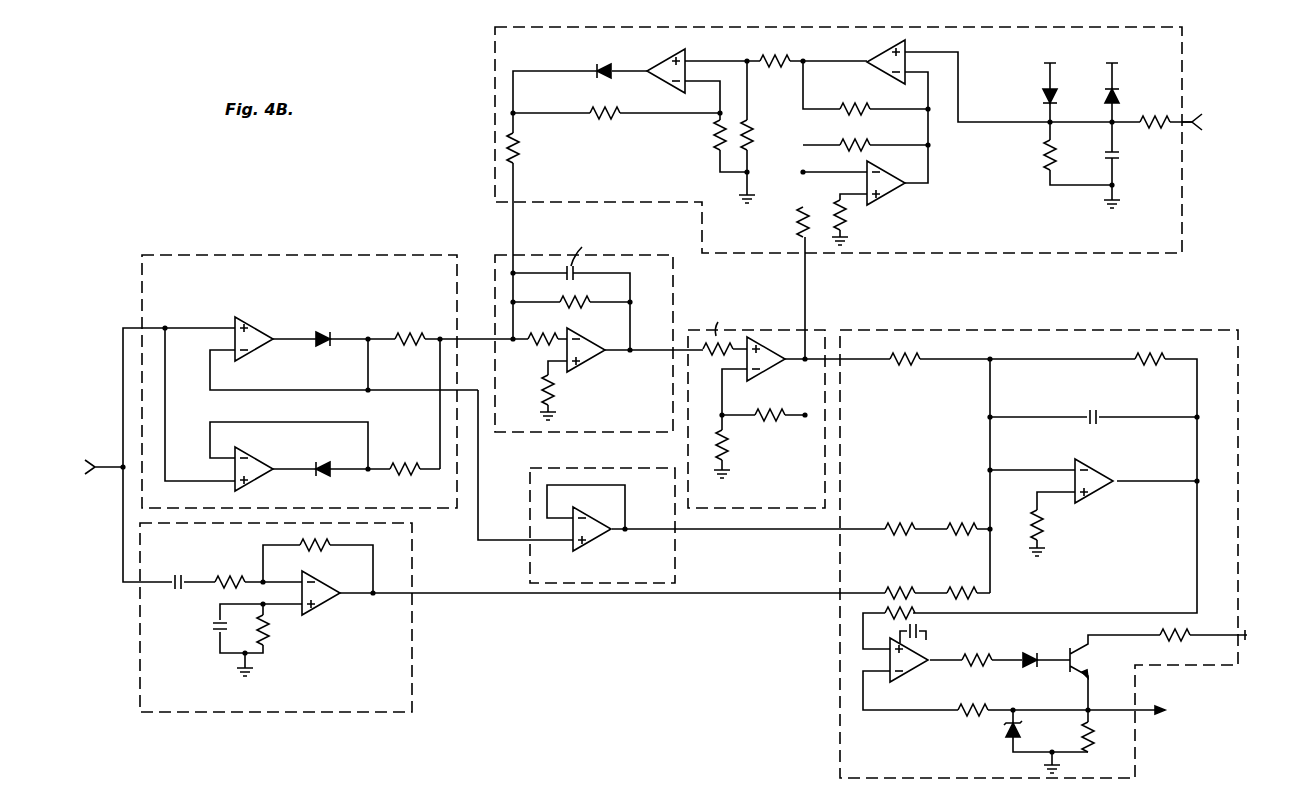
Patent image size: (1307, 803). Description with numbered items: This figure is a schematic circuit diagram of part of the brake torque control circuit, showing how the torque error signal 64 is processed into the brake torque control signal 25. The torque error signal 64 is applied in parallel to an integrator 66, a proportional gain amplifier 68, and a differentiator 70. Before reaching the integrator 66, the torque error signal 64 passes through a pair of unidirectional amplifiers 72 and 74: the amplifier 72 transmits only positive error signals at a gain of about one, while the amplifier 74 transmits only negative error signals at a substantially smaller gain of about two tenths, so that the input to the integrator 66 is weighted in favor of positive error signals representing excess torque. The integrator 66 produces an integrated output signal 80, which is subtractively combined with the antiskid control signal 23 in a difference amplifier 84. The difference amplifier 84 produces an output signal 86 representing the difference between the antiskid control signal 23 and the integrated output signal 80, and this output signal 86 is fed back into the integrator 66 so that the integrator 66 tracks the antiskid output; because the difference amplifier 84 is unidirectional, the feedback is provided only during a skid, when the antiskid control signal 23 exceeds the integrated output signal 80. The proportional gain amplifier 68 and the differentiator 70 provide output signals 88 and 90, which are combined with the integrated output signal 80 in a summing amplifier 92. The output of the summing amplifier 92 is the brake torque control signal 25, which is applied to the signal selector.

The antiskid control signal 23 is at (1192, 118).
The brake torque control signal 25 is at (1142, 724).
The torque error signal 64 is at (106, 458).
The integrator 66 is at (487, 279).
The proportional gain amplifier 68 is at (685, 574).
The differentiator 70 is at (413, 681).
The unidirectional amplifier 72 is at (319, 361).
The unidirectional amplifier 74 is at (325, 465).
The integrated output signal 80 is at (834, 347).
The difference amplifier 84 is at (487, 142).
The output signal 86 is at (511, 217).
The output signal 88 is at (778, 533).
The output signal 90 is at (490, 596).
The summing amplifier 92 is at (832, 675).